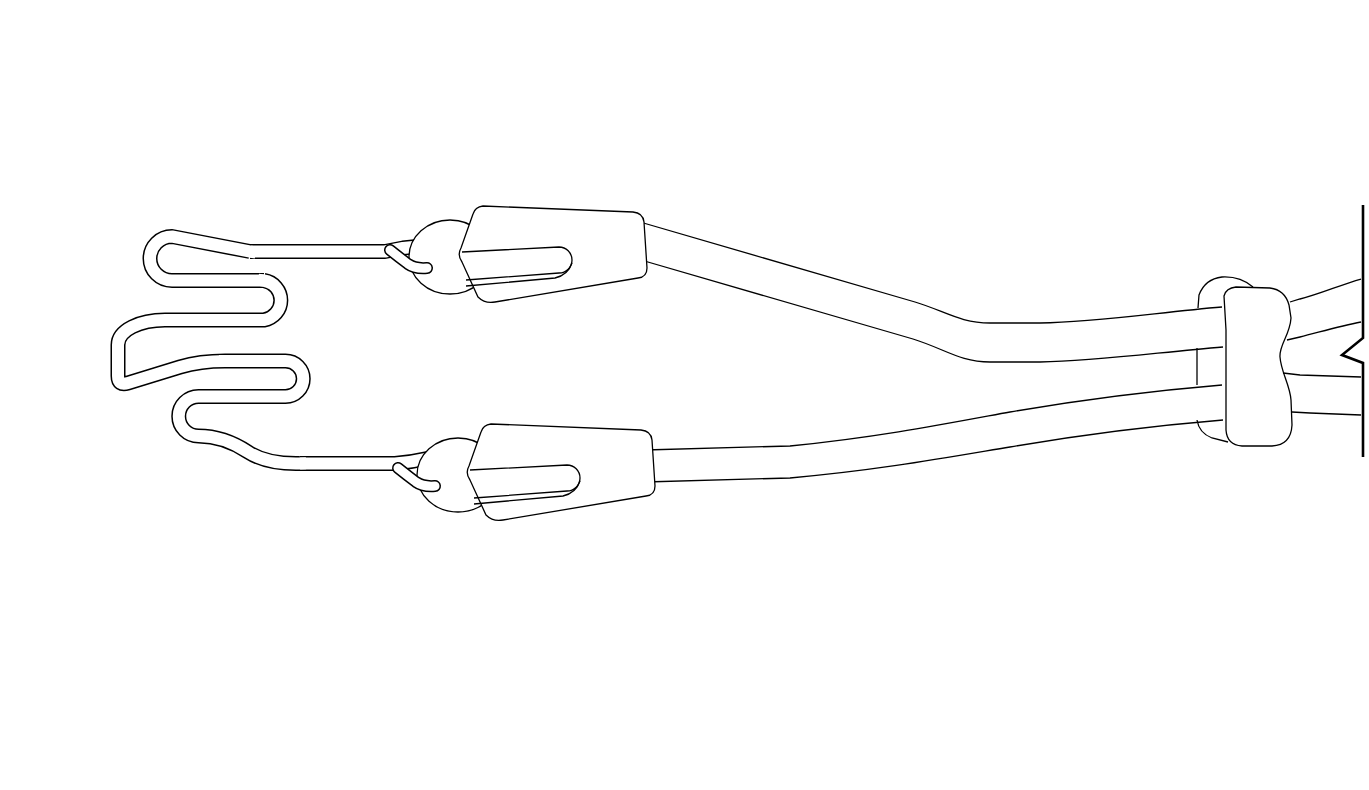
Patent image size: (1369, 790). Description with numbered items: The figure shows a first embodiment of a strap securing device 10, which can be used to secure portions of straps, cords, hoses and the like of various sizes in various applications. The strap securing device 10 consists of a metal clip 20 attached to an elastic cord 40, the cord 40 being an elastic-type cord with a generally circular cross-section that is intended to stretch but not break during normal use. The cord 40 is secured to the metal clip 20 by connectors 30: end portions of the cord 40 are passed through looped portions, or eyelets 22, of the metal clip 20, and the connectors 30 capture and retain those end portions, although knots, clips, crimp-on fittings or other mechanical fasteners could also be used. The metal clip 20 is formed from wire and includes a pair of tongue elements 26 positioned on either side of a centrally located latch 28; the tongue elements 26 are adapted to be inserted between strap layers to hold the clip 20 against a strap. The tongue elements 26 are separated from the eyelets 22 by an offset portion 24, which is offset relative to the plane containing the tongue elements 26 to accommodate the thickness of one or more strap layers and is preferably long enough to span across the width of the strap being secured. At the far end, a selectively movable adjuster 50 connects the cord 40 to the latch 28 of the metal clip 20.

The strap securing device 10 is at (747, 75).
The metal clip 20 is at (251, 349).
The looped portions (eyelets) 22 is at (397, 487).
The offset portion 24 is at (308, 245).
The tongue elements 26 is at (310, 371).
The latch 28 is at (110, 370).
The connector 30 is at (590, 286).
The elastic cord 40 is at (747, 293).
The selectively movable adjuster 50 is at (1263, 433).